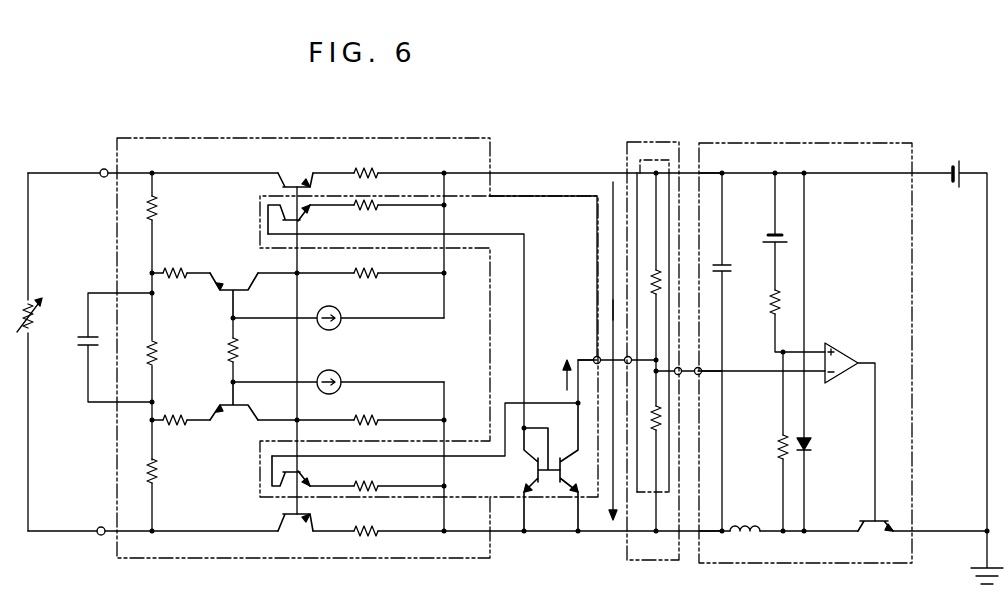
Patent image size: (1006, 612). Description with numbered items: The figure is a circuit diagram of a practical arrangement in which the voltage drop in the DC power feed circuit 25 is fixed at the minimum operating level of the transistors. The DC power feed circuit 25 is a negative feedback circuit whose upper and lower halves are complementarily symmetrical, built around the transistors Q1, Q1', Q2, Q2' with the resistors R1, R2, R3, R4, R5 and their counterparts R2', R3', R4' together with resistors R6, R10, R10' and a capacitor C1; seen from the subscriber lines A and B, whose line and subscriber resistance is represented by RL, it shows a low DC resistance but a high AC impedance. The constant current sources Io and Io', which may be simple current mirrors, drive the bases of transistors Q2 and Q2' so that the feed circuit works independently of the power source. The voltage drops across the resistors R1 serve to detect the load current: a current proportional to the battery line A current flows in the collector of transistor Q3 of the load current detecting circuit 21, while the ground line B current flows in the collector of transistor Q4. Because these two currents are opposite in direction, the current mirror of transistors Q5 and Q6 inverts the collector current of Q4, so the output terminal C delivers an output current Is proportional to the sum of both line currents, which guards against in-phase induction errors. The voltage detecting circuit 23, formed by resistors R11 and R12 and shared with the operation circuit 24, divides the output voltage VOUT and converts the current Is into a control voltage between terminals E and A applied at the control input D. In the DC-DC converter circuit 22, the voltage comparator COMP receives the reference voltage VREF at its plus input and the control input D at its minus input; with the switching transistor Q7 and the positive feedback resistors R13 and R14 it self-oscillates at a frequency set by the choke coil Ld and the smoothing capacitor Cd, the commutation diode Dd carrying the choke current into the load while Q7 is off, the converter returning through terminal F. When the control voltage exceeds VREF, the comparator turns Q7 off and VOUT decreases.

The DC power feed circuit 25 is at (295, 138).
The load current detecting circuit 21 is at (576, 196).
The voltage detecting circuit 23 is at (632, 142).
The operation circuit 24 is at (667, 160).
The DC-DC converter circuit 22 is at (803, 143).
The subscriber line (battery line) A is at (93, 161).
The subscriber line (ground line) B is at (90, 518).
The output terminal C is at (579, 345).
The control input D is at (724, 359).
The terminal E is at (720, 162).
The node F is at (715, 547).
The line and subscriber resistance RL is at (33, 310).
The capacitor C1 is at (78, 341).
The resistor R1 is at (366, 166).
The resistor R2 is at (351, 262).
The resistor R2' is at (351, 405).
The resistor R3 is at (181, 260).
The resistor R3' is at (181, 405).
The resistor R4 is at (167, 206).
The resistor R4' is at (137, 472).
The resistor R5 is at (148, 346).
The resistor R6 is at (228, 344).
The resistor R10 is at (377, 216).
The resistor R10' is at (377, 473).
The resistor R11 is at (650, 276).
The resistor R12 is at (660, 424).
The resistor R13 is at (770, 304).
The resistor R14 is at (779, 444).
The transistor Q1 is at (286, 166).
The transistor Q1' is at (294, 535).
The transistor Q2 is at (234, 282).
The transistor Q2' is at (234, 414).
The transistor Q3 is at (306, 226).
The transistor Q4 is at (304, 474).
The transistor Q5 is at (520, 468).
The transistor Q6 is at (572, 456).
The switching transistor Q7 is at (873, 528).
The constant current source Io is at (338, 308).
The constant current source Io' is at (338, 368).
The output current Is is at (556, 368).
The output voltage VOUT is at (613, 310).
The smoothing capacitor Cd is at (717, 352).
The reference voltage VREF is at (758, 231).
The commutation diode Dd is at (810, 446).
The voltage comparator COMP is at (846, 418).
The choke coil Ld is at (742, 526).